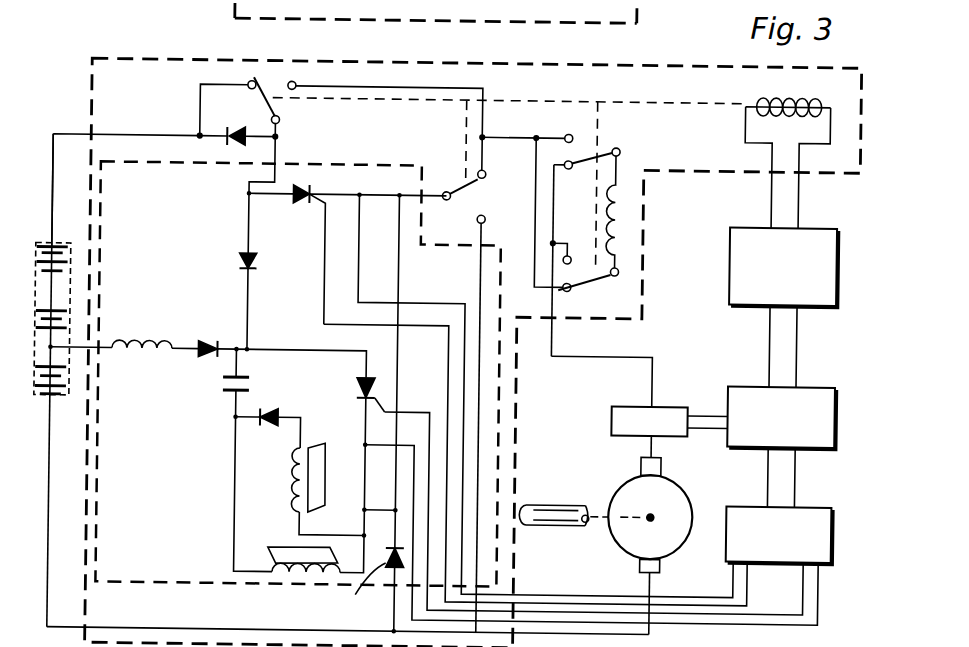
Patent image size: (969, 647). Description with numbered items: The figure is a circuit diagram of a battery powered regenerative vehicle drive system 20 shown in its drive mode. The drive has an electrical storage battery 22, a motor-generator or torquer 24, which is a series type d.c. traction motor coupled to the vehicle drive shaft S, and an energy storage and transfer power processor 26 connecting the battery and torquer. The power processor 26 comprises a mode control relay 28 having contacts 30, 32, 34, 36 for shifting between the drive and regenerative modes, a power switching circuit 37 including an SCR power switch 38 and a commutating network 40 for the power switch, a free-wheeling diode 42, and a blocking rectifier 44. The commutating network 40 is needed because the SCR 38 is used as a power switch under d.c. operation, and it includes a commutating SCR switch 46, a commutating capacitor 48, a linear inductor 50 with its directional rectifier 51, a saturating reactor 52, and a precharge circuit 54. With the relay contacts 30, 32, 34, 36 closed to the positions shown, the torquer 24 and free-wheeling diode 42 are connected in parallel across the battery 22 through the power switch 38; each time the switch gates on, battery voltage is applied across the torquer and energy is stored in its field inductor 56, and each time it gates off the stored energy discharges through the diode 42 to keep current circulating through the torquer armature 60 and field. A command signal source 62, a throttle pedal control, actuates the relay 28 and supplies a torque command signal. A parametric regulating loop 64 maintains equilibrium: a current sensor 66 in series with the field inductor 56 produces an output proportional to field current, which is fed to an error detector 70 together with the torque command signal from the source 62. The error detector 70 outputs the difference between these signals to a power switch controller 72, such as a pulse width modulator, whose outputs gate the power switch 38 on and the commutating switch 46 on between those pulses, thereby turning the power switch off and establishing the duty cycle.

The battery powered regenerative vehicle drive system 20 is at (90, 116).
The electrical storage battery 22 is at (76, 298).
The motor-generator (torquer) 24 is at (610, 472).
The energy storage and transfer power processor 26 is at (88, 72).
The mode control relay 28 is at (786, 80).
The relay contact 30 is at (571, 153).
The relay contact 32 is at (581, 276).
The relay contact 34 is at (490, 181).
The relay contact 36 is at (276, 77).
The power switching circuit 37 is at (154, 156).
The SCR power switch 38 is at (302, 204).
The commutating network 40 is at (226, 500).
The free-wheeling diode 42 is at (367, 582).
The blocking rectifier 44 is at (242, 125).
The commutating SCR switch 46 is at (386, 380).
The commutating capacitor 48 is at (226, 387).
The linear inductor 50 is at (296, 468).
The directional rectifier 51 is at (282, 400).
The saturating reactor 52 is at (290, 572).
The precharge circuit 54 is at (163, 340).
The torquer field inductor 56 is at (633, 166).
The torquer armature 60 is at (676, 539).
The command signal source 62 is at (826, 210).
The parametric regulating loop 64 is at (711, 430).
The current sensor 66 is at (637, 397).
The error detector 70 is at (842, 409).
The power switch controller 72 is at (840, 538).
The vehicle drive shaft S is at (582, 518).